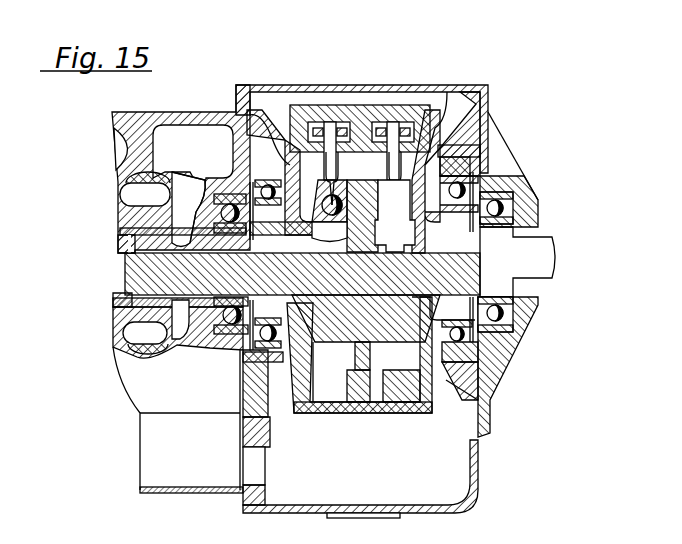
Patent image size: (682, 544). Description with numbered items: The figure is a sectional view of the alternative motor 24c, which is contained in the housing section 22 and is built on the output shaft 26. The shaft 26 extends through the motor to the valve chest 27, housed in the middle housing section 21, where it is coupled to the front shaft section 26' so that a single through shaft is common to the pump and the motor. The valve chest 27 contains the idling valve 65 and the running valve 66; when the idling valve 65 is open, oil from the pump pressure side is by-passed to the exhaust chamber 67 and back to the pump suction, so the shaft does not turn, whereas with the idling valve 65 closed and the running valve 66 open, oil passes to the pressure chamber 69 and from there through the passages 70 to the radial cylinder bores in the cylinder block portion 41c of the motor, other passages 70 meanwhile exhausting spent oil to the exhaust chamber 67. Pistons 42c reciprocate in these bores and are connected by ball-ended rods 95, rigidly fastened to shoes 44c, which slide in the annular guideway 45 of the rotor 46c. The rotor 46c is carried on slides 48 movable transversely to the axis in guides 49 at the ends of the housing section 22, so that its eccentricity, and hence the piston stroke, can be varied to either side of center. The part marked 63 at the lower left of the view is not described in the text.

The shoes 44c is at (318, 122).
The rotor 46c is at (447, 92).
The annular guideway 45 is at (293, 132).
The ball-ended rods 95 is at (394, 170).
The pistons 42c is at (363, 216).
The idling valve 65 is at (145, 178).
The exhaust chamber 67 is at (181, 192).
The front shaft section 26' is at (160, 170).
The passages 70 is at (302, 290).
The shaft 26 is at (537, 262).
The running valve 66 is at (113, 313).
The valve chest 27 is at (145, 365).
The pressure chamber 69 is at (180, 325).
The bore 63 is at (143, 472).
The middle housing section 21 is at (186, 495).
The cover plate 41c is at (359, 355).
The motor 24c is at (343, 422).
The guides 49 is at (448, 378).
The slides 48 is at (478, 357).
The housing section 22 is at (478, 462).